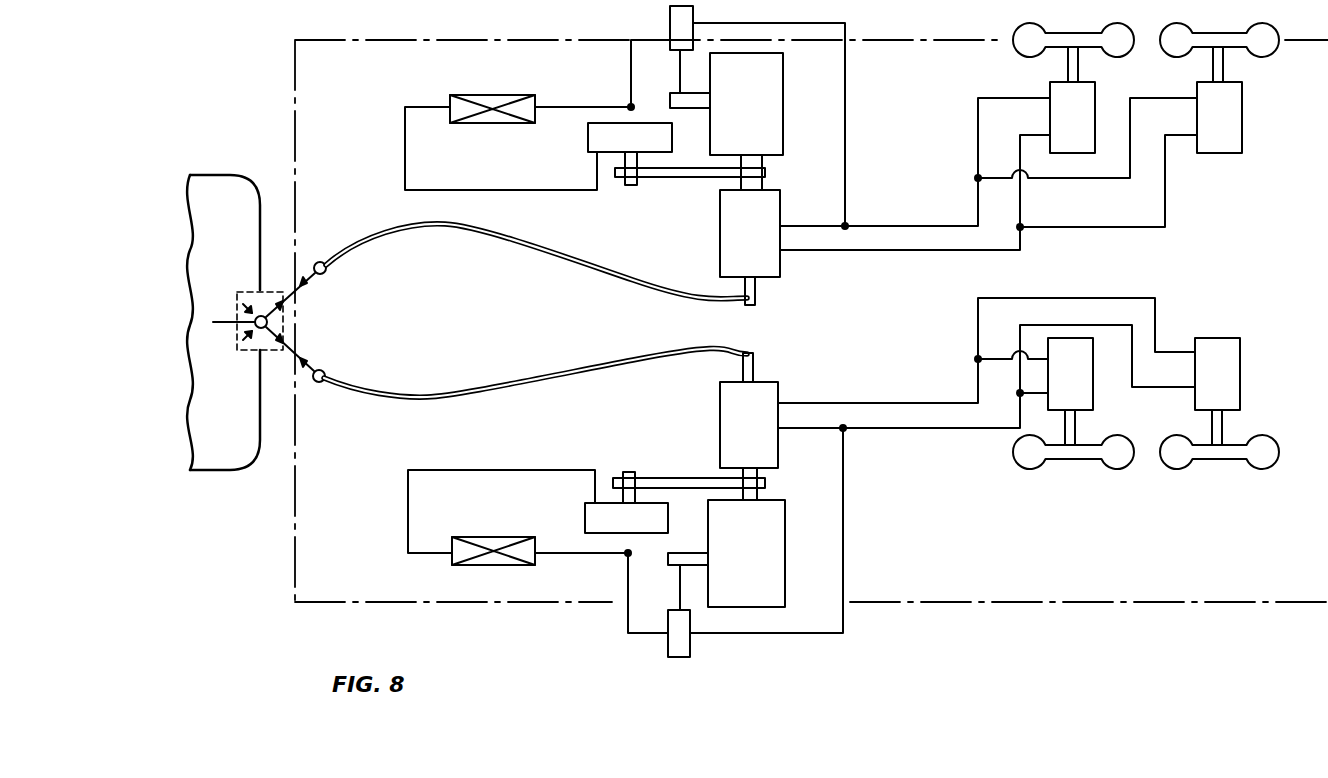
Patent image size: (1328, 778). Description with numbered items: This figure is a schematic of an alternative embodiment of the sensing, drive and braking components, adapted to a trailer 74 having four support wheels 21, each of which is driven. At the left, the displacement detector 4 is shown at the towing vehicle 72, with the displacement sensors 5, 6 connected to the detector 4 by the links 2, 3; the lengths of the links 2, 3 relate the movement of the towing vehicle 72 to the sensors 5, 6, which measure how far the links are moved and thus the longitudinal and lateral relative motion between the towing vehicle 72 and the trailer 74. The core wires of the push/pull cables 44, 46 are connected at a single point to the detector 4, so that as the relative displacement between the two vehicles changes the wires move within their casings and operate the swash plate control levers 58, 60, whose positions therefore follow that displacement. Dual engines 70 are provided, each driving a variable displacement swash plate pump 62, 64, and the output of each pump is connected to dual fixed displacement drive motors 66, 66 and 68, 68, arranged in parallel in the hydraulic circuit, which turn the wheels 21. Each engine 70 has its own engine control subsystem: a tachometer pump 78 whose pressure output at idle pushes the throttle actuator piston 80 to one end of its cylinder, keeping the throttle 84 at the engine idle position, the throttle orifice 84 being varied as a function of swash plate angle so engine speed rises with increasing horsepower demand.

The link 2 is at (304, 278).
The link 3 is at (300, 345).
The displacement detector 4 is at (257, 328).
The displacement sensor 5 is at (320, 261).
The displacement sensor 6 is at (318, 383).
The support wheels 21 is at (1177, 52).
The push/pull cable 44 is at (553, 257).
The push/pull cable 46 is at (508, 383).
The swash plate control lever 58 is at (757, 290).
The swash plate control lever 60 is at (757, 370).
The variable displacement pump 62 is at (720, 236).
The variable displacement pump 64 is at (720, 432).
The fixed displacement motor 66 is at (1075, 153).
The fixed displacement motor 68 is at (1238, 340).
The engine 70 is at (772, 104).
The towing vehicle 72 is at (238, 463).
The trailer 74 is at (330, 598).
The tachometer pump 78 is at (588, 148).
The throttle actuator piston 80 is at (670, 14).
The throttle 84 is at (475, 96).